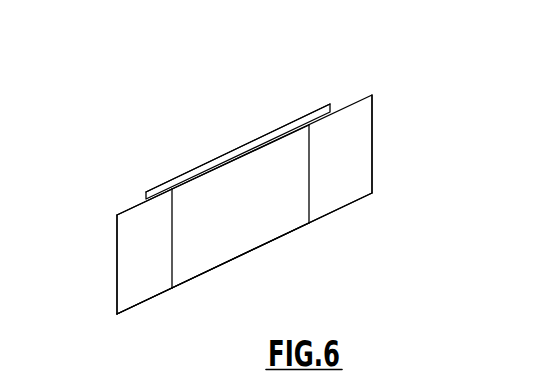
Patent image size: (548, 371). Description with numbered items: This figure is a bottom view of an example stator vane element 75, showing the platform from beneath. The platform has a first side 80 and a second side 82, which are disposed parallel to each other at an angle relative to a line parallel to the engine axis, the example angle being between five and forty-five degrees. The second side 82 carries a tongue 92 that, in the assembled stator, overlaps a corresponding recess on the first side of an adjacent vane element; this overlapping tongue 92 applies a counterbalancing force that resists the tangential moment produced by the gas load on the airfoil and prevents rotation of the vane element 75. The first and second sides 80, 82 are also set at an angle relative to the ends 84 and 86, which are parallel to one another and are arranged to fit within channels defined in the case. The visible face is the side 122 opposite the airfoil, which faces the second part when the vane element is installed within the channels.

The stator vane element 75 is at (246, 202).
The first side 80 is at (219, 277).
The second side 82 is at (243, 135).
The end 84 is at (381, 151).
The end 86 is at (108, 285).
The tongue 92 is at (198, 165).
The side 122 is at (240, 212).